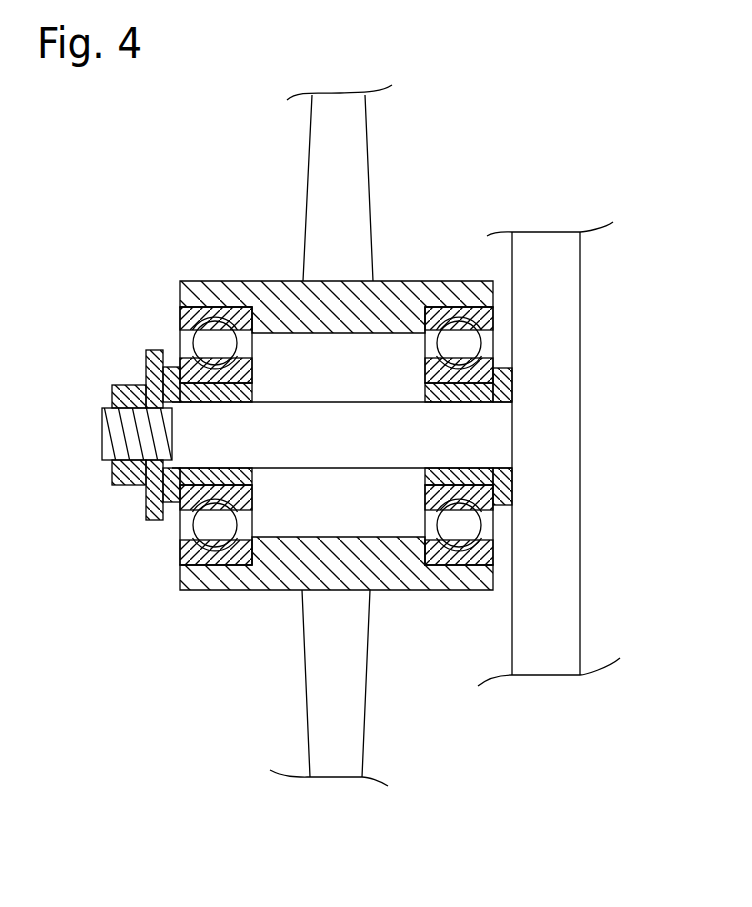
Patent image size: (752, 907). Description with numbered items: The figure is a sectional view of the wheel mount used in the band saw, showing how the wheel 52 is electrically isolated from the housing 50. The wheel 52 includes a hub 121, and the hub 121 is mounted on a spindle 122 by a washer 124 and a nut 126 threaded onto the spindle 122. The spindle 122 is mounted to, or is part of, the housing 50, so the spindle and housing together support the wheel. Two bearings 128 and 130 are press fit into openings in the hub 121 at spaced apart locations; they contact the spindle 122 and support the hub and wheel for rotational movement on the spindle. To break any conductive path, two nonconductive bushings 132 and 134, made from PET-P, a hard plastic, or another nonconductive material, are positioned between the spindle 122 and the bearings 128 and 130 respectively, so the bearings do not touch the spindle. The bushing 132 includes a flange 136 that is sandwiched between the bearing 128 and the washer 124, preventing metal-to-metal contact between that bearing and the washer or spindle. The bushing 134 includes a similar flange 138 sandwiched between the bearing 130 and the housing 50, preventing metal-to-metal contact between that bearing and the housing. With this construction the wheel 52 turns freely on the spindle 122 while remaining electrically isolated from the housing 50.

The housing 50 is at (557, 383).
The wheel 52 is at (370, 205).
The hub 121 is at (410, 282).
The spindle 122 is at (335, 441).
The washer 124 is at (150, 355).
The nut 126 is at (117, 392).
The bearing 128 is at (188, 313).
The bearing 130 is at (488, 323).
The nonconductive bushing 132 is at (243, 472).
The nonconductive bushing 134 is at (427, 480).
The flange 136 is at (178, 502).
The flange 138 is at (505, 492).